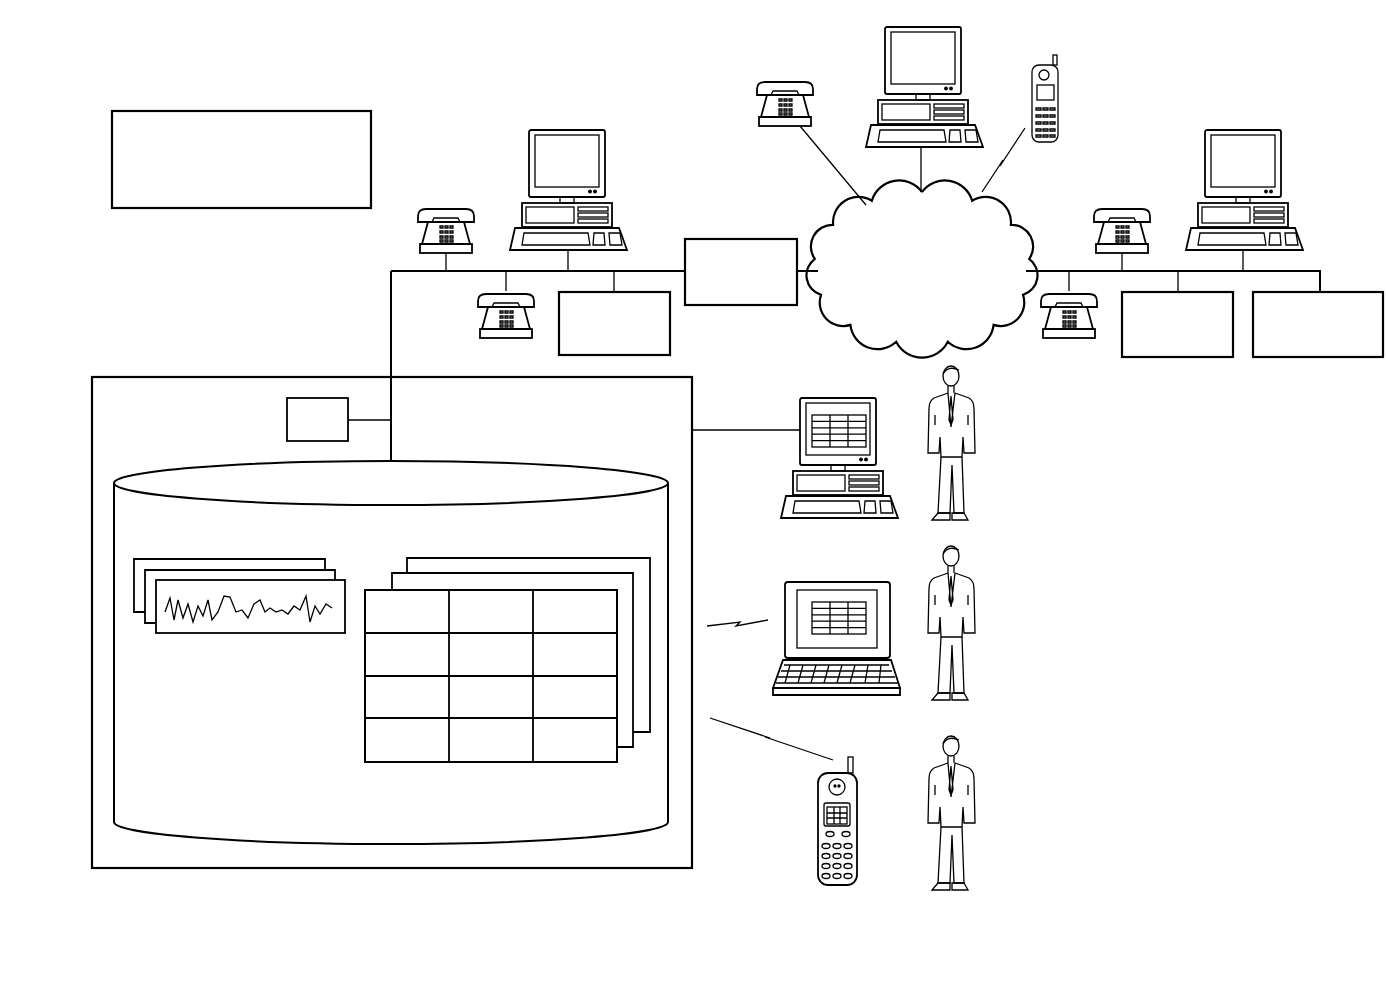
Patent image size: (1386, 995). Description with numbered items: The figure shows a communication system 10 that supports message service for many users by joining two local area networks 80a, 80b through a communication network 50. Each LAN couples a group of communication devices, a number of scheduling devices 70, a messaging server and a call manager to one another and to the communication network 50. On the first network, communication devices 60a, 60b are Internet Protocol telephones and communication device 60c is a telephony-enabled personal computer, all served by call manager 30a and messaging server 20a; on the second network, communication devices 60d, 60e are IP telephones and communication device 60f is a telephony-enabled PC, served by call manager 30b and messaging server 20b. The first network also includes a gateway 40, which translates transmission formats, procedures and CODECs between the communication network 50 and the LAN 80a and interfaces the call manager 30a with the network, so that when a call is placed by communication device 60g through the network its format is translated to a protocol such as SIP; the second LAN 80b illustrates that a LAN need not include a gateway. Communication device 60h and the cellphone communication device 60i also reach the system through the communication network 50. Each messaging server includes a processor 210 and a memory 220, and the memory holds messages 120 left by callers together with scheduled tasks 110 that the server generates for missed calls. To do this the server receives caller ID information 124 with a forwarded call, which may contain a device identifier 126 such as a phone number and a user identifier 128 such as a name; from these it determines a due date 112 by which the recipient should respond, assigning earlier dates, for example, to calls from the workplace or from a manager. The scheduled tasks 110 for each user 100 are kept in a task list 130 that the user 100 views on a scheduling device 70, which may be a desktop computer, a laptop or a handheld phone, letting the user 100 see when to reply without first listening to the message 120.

The communication system 10 is at (1165, 525).
The messaging server 20a is at (286, 374).
The messaging server 20b is at (1326, 357).
The call manager 30a is at (670, 330).
The call manager 30b is at (1186, 357).
The gateway 40 is at (741, 239).
The communication network 50 is at (1013, 216).
The communication device 60a is at (440, 205).
The communication device 60b is at (478, 318).
The communication device 60c is at (561, 130).
The communication device 60d is at (1128, 206).
The communication device 60e is at (1075, 338).
The communication device 60f is at (1251, 130).
The communication device 60g is at (781, 79).
The communication device 60h is at (962, 60).
The communication device 60i is at (1060, 104).
The scheduling device 70 is at (800, 416).
The local area network 80a is at (391, 292).
The local area network 80b is at (1320, 282).
The user 100 is at (975, 433).
The scheduled task 110 is at (475, 685).
The due date 112 is at (588, 712).
The message 120 is at (212, 636).
The caller ID information 124 is at (229, 110).
The device identifier 126 is at (290, 147).
The user identifier 128 is at (178, 147).
The task list 130 is at (841, 406).
The processor 210 is at (287, 412).
The memory 220 is at (512, 462).